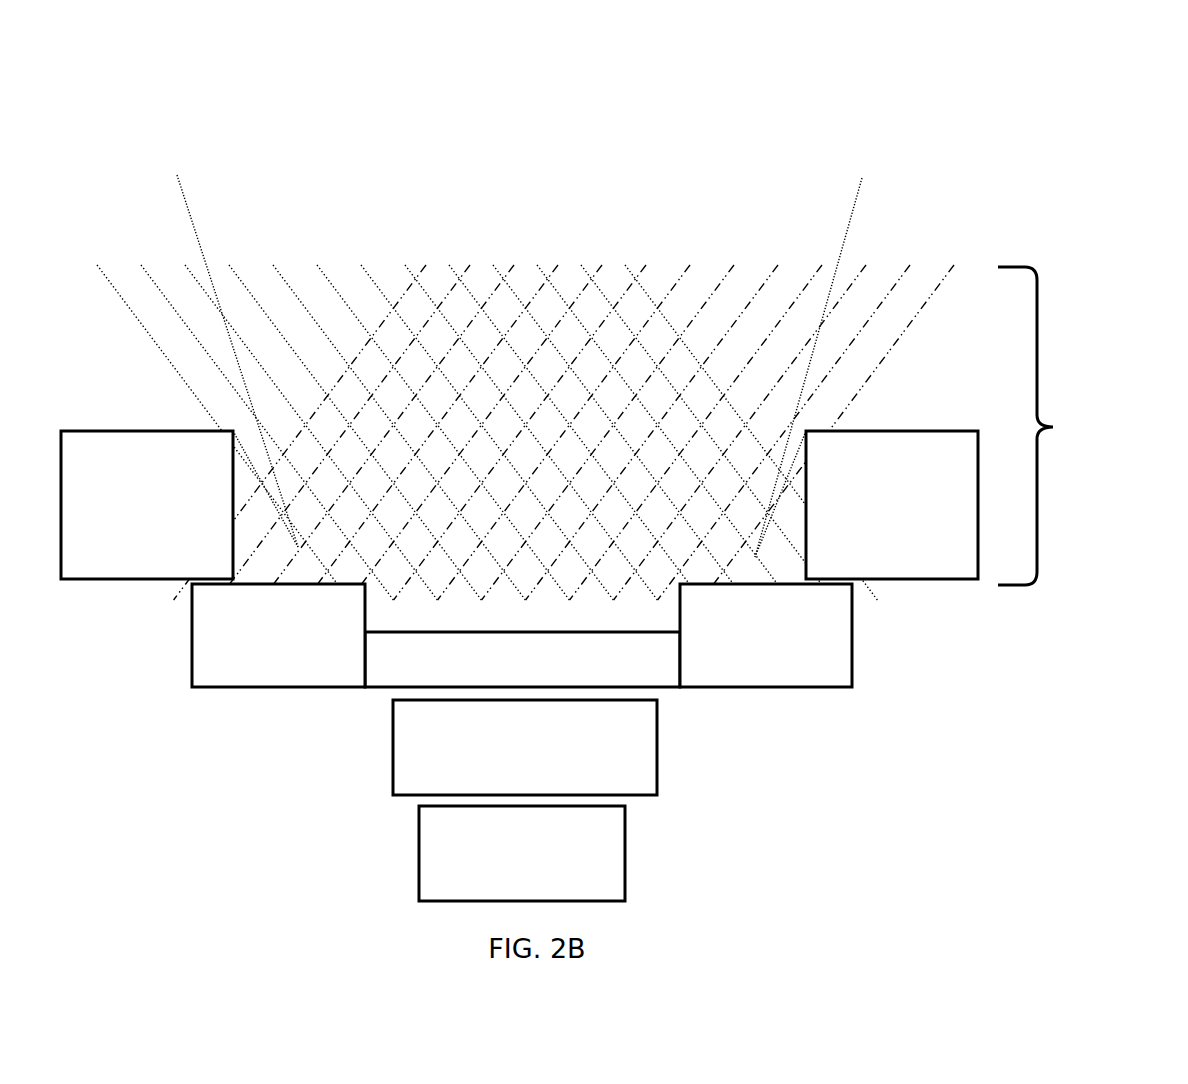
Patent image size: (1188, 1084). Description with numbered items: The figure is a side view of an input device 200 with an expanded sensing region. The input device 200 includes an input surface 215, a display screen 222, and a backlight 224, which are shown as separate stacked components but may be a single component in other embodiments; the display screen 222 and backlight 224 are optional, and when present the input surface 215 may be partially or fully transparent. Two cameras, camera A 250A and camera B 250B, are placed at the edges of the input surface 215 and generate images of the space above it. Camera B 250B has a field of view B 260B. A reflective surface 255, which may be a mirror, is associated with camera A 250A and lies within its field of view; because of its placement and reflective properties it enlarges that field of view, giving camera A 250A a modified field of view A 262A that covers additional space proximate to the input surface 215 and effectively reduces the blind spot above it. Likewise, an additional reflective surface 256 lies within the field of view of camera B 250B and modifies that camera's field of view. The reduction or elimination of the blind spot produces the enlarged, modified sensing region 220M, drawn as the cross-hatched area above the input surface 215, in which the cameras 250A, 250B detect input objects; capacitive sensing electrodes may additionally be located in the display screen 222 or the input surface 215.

The input device 200 is at (1104, 160).
The input surface 215 is at (612, 672).
The modified sensing region 220M is at (626, 432).
The display screen 222 is at (509, 776).
The backlight 224 is at (506, 881).
The camera A 250A is at (255, 662).
The camera B 250B is at (743, 662).
The reflective surface 255 is at (131, 544).
The additional reflective surface 256 is at (876, 559).
The field of view B 260B is at (857, 312).
The modified field of view A 262A is at (207, 300).